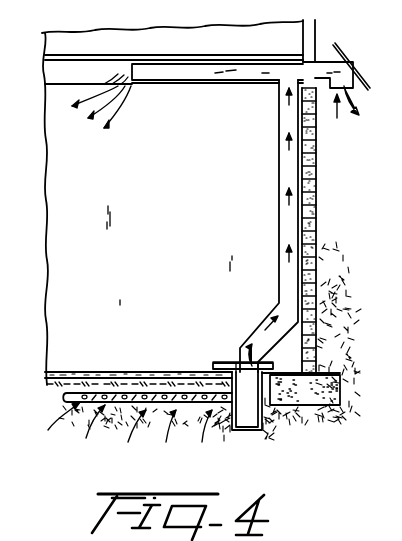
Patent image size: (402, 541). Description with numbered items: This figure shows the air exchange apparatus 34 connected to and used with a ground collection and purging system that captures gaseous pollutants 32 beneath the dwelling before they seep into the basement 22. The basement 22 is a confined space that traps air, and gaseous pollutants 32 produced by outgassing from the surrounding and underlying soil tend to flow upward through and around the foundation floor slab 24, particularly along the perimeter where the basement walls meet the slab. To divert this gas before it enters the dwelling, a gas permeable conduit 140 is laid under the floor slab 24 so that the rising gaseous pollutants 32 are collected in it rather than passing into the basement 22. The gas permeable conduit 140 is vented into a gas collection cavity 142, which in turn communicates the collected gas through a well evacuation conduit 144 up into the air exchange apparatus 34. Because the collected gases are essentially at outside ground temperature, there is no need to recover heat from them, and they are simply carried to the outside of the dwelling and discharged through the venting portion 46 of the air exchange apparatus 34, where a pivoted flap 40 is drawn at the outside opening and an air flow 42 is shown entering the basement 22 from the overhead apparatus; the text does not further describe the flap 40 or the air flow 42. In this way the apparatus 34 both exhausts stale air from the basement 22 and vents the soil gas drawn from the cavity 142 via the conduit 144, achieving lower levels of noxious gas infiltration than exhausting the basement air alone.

The basement 22 is at (80, 265).
The foundation floor slab 24 is at (74, 371).
The gaseous pollutants 32 is at (130, 427).
The air exchange apparatus 34 is at (284, 45).
The damper 40 is at (344, 66).
The air discharge flow 42 is at (125, 89).
The venting portion 46 is at (352, 93).
The gas permeable conduit 140 is at (153, 392).
The gas collection cavity 142 is at (252, 425).
The well evacuation conduit 144 is at (279, 220).